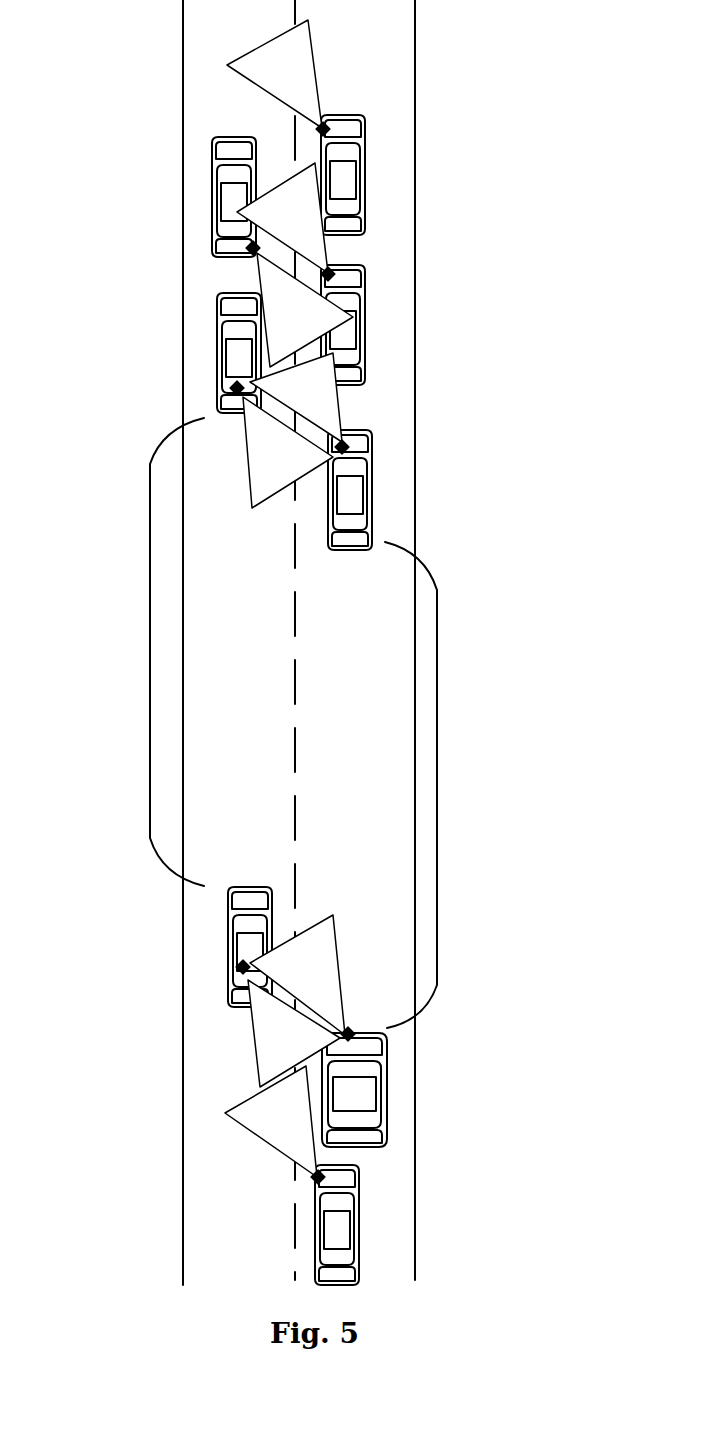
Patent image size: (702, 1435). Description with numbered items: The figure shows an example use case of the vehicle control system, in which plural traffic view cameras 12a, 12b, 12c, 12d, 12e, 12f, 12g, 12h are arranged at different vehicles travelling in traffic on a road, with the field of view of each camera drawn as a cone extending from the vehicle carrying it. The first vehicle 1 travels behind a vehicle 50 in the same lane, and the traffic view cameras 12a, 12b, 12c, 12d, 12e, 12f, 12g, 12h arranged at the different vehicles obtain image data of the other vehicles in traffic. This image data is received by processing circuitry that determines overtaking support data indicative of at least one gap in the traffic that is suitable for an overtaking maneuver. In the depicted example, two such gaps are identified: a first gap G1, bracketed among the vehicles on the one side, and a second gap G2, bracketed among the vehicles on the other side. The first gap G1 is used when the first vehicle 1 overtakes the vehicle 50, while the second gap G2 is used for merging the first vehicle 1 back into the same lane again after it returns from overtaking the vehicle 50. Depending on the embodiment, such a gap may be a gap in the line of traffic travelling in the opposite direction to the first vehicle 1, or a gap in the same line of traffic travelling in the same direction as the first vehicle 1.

The traffic view camera 12a is at (310, 110).
The traffic view camera 12b is at (318, 257).
The traffic view camera 12c is at (330, 424).
The traffic view camera 12d is at (336, 1010).
The traffic view camera 12e is at (311, 1172).
The traffic view camera 12f is at (268, 268).
The traffic view camera 12g is at (252, 414).
The traffic view camera 12h is at (255, 992).
The vehicle 50 is at (390, 1088).
The first vehicle 1 is at (363, 1205).
The first gap G1 is at (150, 652).
The second gap G2 is at (437, 782).